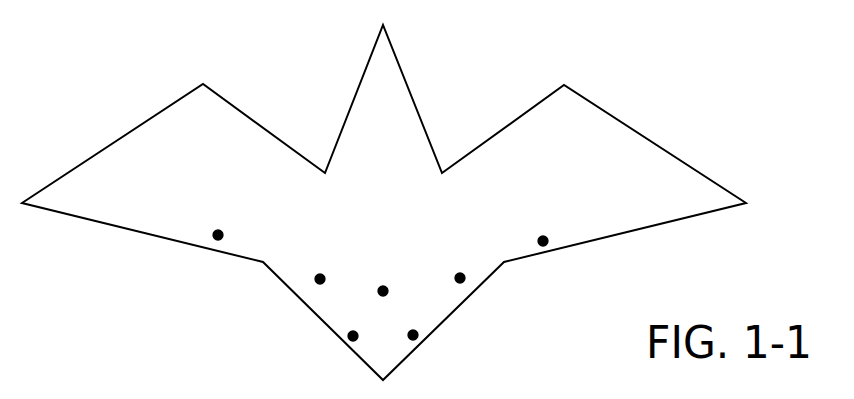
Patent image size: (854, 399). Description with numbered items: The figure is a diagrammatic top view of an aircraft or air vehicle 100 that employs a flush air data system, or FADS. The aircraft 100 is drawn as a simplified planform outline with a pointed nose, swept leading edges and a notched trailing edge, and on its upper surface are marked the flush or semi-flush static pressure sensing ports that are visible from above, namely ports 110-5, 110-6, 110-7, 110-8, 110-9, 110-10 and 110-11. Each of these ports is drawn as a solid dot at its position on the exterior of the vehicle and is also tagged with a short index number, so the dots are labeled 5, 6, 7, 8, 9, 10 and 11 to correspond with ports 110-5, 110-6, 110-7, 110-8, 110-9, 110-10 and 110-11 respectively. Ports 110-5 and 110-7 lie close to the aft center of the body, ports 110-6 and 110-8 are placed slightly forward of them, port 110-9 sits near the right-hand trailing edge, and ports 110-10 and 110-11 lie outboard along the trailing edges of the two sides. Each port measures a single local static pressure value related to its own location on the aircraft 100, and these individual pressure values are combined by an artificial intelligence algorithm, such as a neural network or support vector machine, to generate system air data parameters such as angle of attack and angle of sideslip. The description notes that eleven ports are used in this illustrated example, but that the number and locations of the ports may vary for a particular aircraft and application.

The aircraft 100 is at (612, 116).
The static pressure sensing port 110-5 is at (353, 336).
The static pressure sensing port 110-6 is at (383, 291).
The static pressure sensing port 110-7 is at (413, 335).
The static pressure sensing port 110-8 is at (320, 279).
The static pressure sensing port 110-9 is at (460, 278).
The static pressure sensing port 110-10 is at (543, 241).
The static pressure sensing port 110-11 is at (218, 235).
The point 5 is at (352, 324).
The point 6 is at (382, 275).
The point 7 is at (412, 324).
The point 8 is at (320, 267).
The point 9 is at (459, 267).
The point 10 is at (544, 228).
The point 11 is at (218, 223).